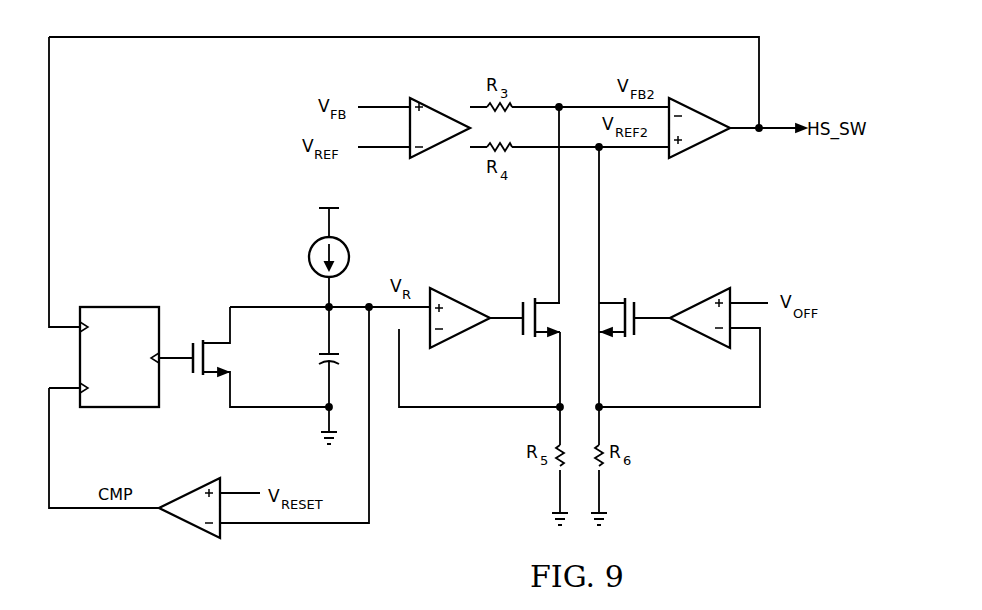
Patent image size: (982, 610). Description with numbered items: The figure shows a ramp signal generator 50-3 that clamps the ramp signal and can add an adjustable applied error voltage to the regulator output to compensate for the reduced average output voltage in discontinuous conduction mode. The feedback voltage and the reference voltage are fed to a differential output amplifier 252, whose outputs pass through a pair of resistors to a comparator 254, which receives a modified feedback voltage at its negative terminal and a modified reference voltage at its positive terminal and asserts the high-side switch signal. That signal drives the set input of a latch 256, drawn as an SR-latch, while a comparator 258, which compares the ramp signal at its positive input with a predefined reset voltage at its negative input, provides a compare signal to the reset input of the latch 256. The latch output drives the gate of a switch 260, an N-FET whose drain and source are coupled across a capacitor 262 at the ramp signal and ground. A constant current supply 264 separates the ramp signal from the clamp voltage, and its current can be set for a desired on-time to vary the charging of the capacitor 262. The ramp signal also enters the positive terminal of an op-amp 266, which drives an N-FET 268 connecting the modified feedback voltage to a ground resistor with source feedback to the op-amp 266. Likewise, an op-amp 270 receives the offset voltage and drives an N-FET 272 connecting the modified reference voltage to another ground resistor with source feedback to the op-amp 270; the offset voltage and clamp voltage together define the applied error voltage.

The differential output amplifier 252 is at (422, 100).
The comparator 254 is at (700, 108).
The latch 256 is at (118, 408).
The comparator 258 is at (190, 525).
The switch 260 is at (194, 372).
The capacitor 262 is at (318, 360).
The constant current supply 264 is at (308, 260).
The operational amplifier 266 is at (462, 300).
The N-FET 268 is at (524, 327).
The operational amplifier 270 is at (702, 302).
The N-FET 272 is at (643, 327).
The ramp signal generator 50-3 is at (702, 462).